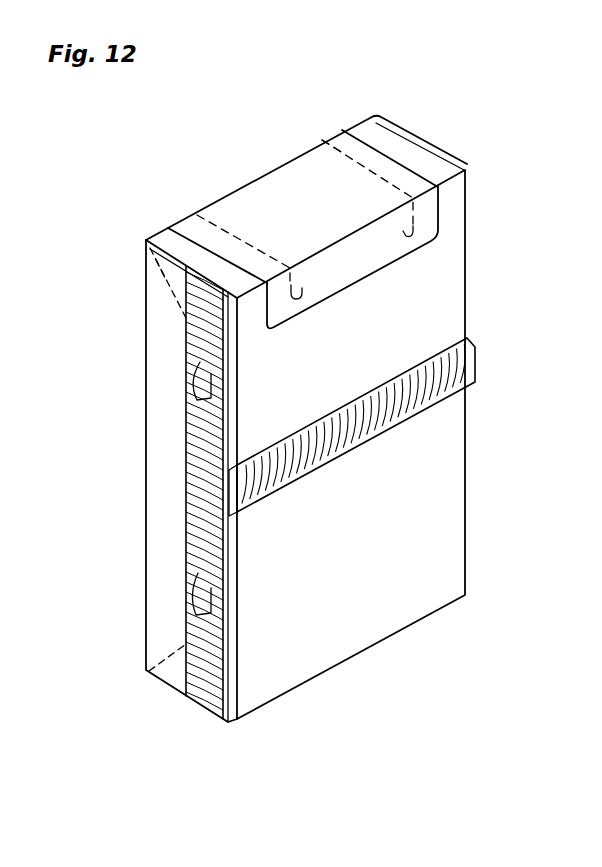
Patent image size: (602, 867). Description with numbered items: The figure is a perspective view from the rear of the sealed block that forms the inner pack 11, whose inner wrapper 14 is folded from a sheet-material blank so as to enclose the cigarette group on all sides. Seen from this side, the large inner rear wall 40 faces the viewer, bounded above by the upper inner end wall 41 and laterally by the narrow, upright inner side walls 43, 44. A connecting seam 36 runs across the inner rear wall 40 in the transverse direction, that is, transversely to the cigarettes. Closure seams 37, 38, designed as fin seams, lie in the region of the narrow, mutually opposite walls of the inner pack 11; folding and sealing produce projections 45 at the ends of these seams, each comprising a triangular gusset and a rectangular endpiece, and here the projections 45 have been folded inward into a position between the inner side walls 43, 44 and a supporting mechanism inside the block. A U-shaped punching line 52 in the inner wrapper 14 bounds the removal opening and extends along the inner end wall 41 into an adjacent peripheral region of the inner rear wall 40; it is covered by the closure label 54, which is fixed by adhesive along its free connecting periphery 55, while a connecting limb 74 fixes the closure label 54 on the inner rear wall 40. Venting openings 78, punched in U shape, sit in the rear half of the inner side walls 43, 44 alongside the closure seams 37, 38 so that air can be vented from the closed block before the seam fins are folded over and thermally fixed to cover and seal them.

The inner pack 11 is at (536, 128).
The inner wrapper 14 is at (466, 272).
The connecting seam 36 is at (407, 415).
The closure seam 37 is at (447, 151).
The closure seam 38 is at (187, 513).
The inner rear wall 40 is at (349, 349).
The upper inner end wall 41 is at (428, 138).
The inner side wall 43 is at (466, 318).
The inner side wall 44 is at (158, 582).
The projections 45 is at (170, 290).
The U-shaped punching line 52 is at (375, 160).
The closure label 54 is at (228, 222).
The free connecting periphery 55 is at (325, 142).
The connecting limb 74 is at (425, 217).
The venting openings 78 is at (200, 383).